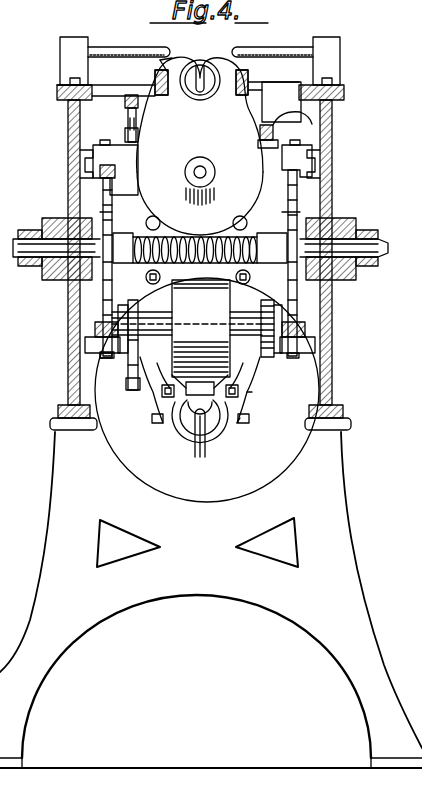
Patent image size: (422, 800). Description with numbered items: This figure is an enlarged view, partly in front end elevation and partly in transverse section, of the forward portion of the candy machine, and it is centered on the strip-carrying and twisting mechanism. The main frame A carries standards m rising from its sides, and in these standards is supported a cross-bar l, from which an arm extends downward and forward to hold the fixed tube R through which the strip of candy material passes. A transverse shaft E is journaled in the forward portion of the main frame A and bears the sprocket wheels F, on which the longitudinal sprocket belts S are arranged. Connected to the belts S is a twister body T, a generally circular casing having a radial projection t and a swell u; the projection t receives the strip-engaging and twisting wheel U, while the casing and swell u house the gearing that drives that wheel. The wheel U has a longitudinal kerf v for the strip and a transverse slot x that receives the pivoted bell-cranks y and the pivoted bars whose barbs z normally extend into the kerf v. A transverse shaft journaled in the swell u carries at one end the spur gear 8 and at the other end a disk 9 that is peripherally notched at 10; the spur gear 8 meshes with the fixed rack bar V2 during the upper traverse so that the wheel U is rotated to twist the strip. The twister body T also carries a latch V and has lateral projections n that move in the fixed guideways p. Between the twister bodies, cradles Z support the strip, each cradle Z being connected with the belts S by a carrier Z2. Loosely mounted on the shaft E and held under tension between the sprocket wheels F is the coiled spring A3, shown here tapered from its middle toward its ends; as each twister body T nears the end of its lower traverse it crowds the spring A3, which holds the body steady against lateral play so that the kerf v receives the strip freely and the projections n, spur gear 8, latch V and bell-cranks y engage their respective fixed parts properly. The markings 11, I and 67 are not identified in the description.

The main frame A is at (67, 387).
The standards m is at (60, 50).
The cross-bar l is at (281, 49).
The transverse slot x is at (157, 72).
The latch V is at (58, 92).
The rack bar V2 is at (298, 120).
The pin 11 is at (160, 102).
The guideways p is at (80, 158).
The lateral projections n is at (72, 172).
The sprocket belts S is at (322, 186).
The disk 9 is at (134, 200).
The peripheral notches 10 is at (131, 304).
The spur gear 8 is at (268, 202).
The sprocket wheels F is at (333, 212).
The transverse shaft E is at (388, 246).
The coiled spring A3 is at (208, 238).
The swell u is at (187, 328).
The twister body T is at (207, 314).
The strip-engaging and twisting wheel U is at (160, 456).
The fixed tube R is at (214, 78).
The longitudinal kerf v is at (210, 66).
The radial projection t is at (170, 52).
The bell-cranks y is at (168, 72).
The cradle Z is at (178, 424).
The barbs z is at (200, 452).
The arm I is at (240, 372).
The carrier Z2 is at (262, 376).
The sheet number 67 is at (13, 303).